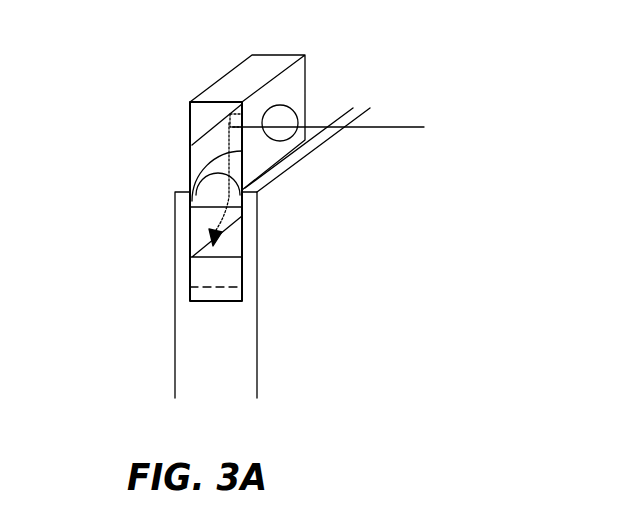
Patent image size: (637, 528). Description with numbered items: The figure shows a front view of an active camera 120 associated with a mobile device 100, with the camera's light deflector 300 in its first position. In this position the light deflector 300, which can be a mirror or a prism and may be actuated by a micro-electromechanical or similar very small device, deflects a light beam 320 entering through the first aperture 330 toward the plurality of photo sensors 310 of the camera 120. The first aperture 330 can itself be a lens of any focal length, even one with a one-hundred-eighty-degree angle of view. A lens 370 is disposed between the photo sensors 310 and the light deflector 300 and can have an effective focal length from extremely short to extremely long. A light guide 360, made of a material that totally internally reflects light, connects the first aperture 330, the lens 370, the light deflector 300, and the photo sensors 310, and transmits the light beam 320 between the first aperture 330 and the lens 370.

The mobile device 100 is at (190, 184).
The active camera 120 is at (242, 62).
The light deflector 300 is at (207, 131).
The photo sensors 310 is at (232, 243).
The light beam 320 is at (415, 126).
The first aperture 330 is at (285, 117).
The light guide 360 is at (230, 287).
The lens 370 is at (244, 196).